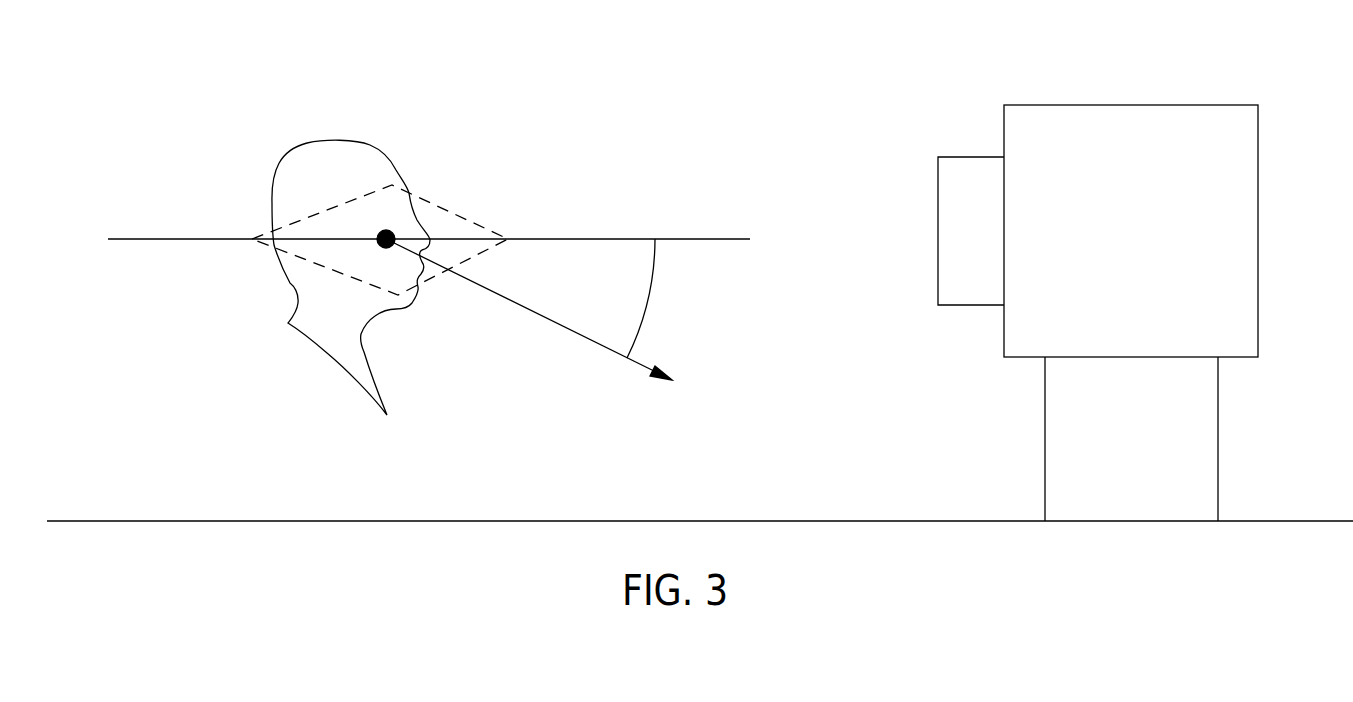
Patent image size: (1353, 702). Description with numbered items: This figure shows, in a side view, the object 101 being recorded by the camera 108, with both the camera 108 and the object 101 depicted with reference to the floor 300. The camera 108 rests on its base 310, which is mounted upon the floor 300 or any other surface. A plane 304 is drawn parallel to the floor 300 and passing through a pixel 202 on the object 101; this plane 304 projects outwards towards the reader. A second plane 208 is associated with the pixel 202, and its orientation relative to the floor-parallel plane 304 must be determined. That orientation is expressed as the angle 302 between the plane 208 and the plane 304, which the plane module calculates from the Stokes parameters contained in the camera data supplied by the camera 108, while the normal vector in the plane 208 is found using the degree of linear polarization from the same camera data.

The object 101 is at (321, 143).
The pixel 202 is at (387, 230).
The plane 208 is at (458, 207).
The floor 300 is at (153, 521).
The angle 302 is at (650, 303).
The plane parallel to the floor 304 is at (701, 238).
The camera 108 is at (1080, 105).
The base of camera 310 is at (1219, 420).